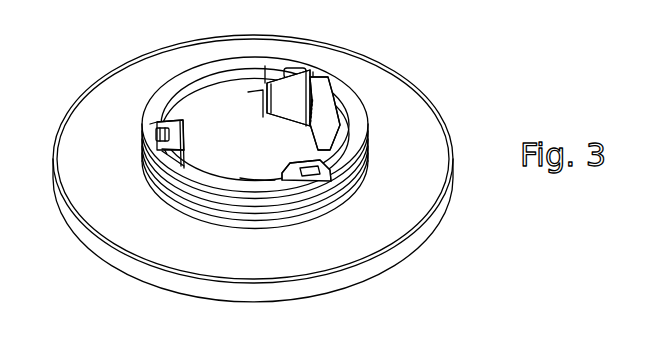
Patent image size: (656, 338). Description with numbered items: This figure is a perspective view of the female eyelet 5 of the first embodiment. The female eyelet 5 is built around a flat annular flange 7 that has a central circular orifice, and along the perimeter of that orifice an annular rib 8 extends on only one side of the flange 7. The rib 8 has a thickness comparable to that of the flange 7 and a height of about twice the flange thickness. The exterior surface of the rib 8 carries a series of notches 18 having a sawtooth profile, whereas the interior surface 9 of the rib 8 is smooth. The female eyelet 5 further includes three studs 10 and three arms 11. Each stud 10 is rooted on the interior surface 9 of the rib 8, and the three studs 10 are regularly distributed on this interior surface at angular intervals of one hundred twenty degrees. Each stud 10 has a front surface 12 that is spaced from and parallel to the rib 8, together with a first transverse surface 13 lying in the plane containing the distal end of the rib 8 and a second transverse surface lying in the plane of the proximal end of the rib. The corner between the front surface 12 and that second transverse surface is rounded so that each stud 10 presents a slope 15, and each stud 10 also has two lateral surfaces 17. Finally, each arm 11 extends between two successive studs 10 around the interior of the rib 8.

The female eyelet 5 is at (440, 69).
The flat annular flange 7 is at (105, 220).
The annular rib 8 is at (143, 157).
The interior surface 9 is at (208, 106).
The stud 10 is at (278, 92).
The arm 11 is at (200, 117).
The front surface 12 is at (288, 100).
The first transverse surface 13 is at (168, 126).
The slope 15 is at (272, 118).
The lateral surface 17 is at (313, 100).
The notches 18 is at (180, 200).